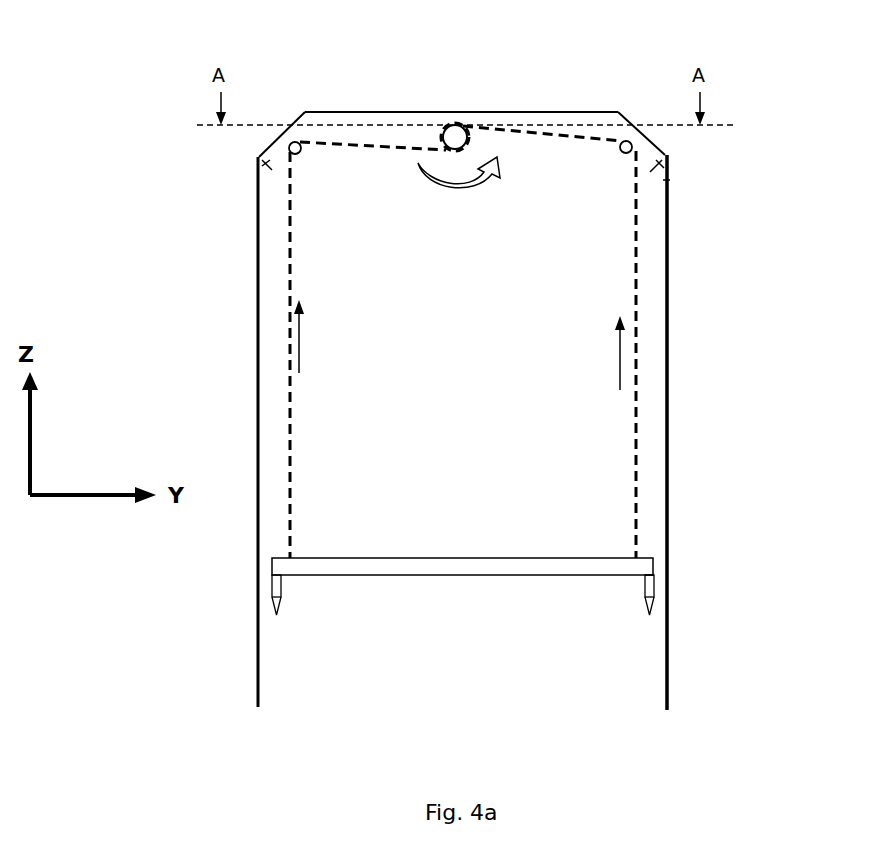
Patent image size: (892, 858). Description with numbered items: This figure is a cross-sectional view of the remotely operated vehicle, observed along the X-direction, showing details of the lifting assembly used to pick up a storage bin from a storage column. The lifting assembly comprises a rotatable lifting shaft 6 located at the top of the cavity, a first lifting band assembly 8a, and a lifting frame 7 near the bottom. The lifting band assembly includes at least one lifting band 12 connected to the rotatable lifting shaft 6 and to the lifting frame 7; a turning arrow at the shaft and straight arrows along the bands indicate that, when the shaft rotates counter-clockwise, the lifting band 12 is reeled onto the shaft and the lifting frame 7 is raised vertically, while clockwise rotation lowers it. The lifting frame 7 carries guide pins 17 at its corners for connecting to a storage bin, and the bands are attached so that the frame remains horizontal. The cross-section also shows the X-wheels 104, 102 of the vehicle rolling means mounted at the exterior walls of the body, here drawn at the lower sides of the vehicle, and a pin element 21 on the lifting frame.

The rotatable lifting shaft 6 is at (455, 137).
The lifting band 12 is at (288, 272).
The first lifting band assembly 8a is at (278, 443).
The support pin 21 is at (290, 557).
The lifting frame 7 is at (350, 577).
The guide pin 17 is at (652, 590).
The X-wheel 104 is at (258, 677).
The X-wheel 102 is at (668, 678).